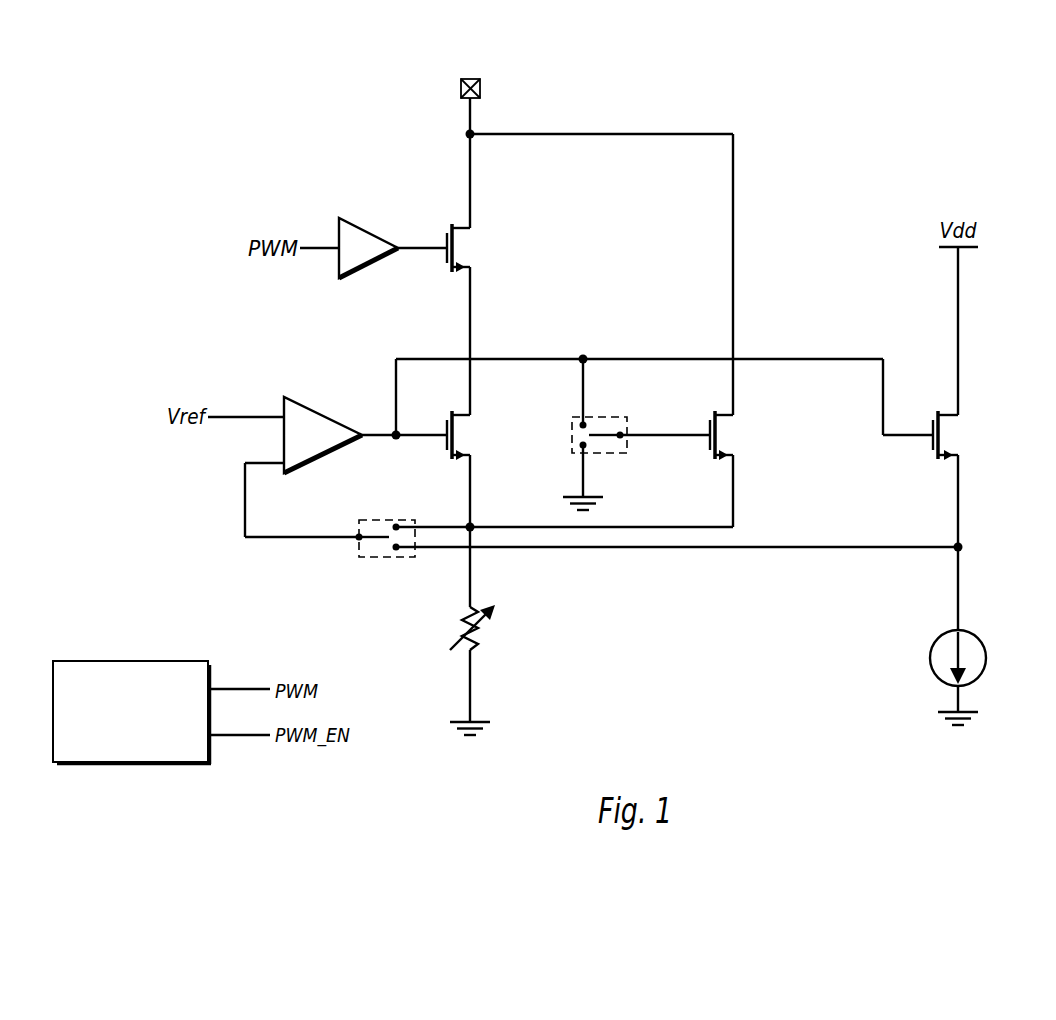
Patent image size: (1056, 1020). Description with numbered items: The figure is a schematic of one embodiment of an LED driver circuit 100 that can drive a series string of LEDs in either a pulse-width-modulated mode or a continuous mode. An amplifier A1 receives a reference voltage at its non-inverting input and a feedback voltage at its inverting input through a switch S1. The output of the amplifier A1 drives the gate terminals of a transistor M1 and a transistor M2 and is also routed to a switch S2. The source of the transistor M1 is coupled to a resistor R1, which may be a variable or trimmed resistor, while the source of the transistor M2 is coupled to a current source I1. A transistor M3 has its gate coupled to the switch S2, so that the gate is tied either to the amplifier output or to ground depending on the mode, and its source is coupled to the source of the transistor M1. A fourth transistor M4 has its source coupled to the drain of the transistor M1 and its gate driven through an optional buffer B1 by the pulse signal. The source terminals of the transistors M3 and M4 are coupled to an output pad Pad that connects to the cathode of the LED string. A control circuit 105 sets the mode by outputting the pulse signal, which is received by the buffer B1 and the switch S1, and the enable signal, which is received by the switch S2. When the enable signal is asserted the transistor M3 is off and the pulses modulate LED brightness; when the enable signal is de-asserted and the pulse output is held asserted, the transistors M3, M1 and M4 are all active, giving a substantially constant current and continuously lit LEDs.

The LED driver circuit 100 is at (690, 50).
The control circuit 105 is at (113, 738).
The buffer B1 is at (352, 217).
The amplifier A1 is at (306, 400).
The transistor M1 is at (466, 435).
The transistor M2 is at (956, 435).
The transistor M3 is at (735, 435).
The fourth transistor M4 is at (473, 248).
The switch S1 is at (378, 542).
The switch S2 is at (624, 434).
The resistor R1 is at (487, 627).
The current source I1 is at (977, 658).
The output pad Pad is at (470, 94).